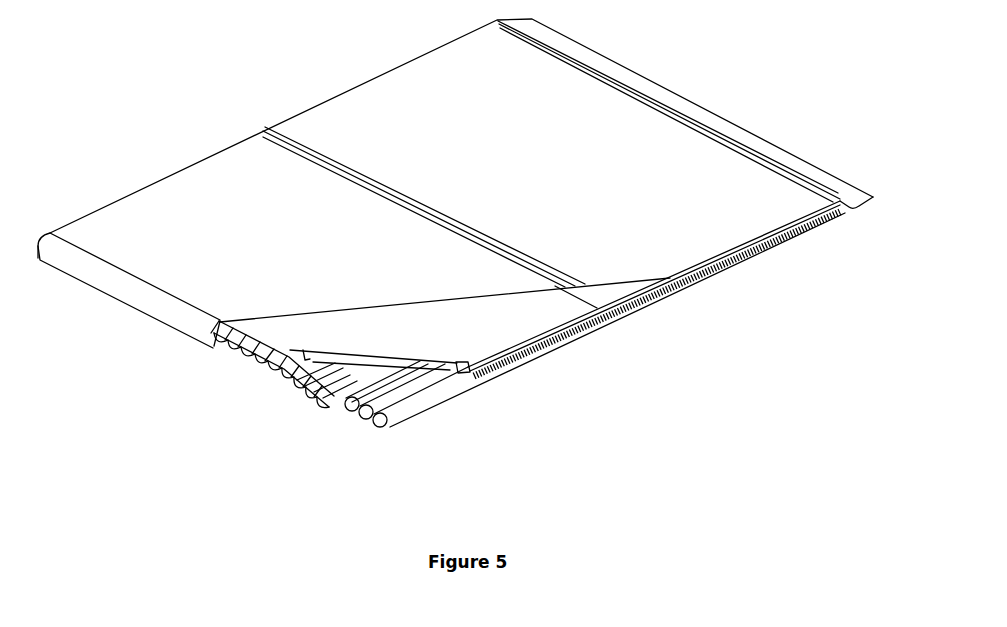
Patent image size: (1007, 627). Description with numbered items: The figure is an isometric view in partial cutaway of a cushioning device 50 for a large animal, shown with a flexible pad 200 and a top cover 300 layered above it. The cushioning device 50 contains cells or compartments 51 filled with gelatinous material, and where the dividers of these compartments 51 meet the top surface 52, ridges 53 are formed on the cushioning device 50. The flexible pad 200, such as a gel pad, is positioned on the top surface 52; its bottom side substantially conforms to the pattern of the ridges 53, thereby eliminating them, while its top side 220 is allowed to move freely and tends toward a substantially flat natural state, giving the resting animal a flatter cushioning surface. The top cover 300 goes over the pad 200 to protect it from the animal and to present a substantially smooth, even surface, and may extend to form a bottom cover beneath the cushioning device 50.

The top cover 300 is at (177, 182).
The top side 220 is at (558, 347).
The flexible pad 200 is at (435, 368).
The cushioning device 50 is at (265, 388).
The compartments 51 is at (352, 424).
The top surface 52 is at (333, 378).
The ridges 53 is at (410, 382).